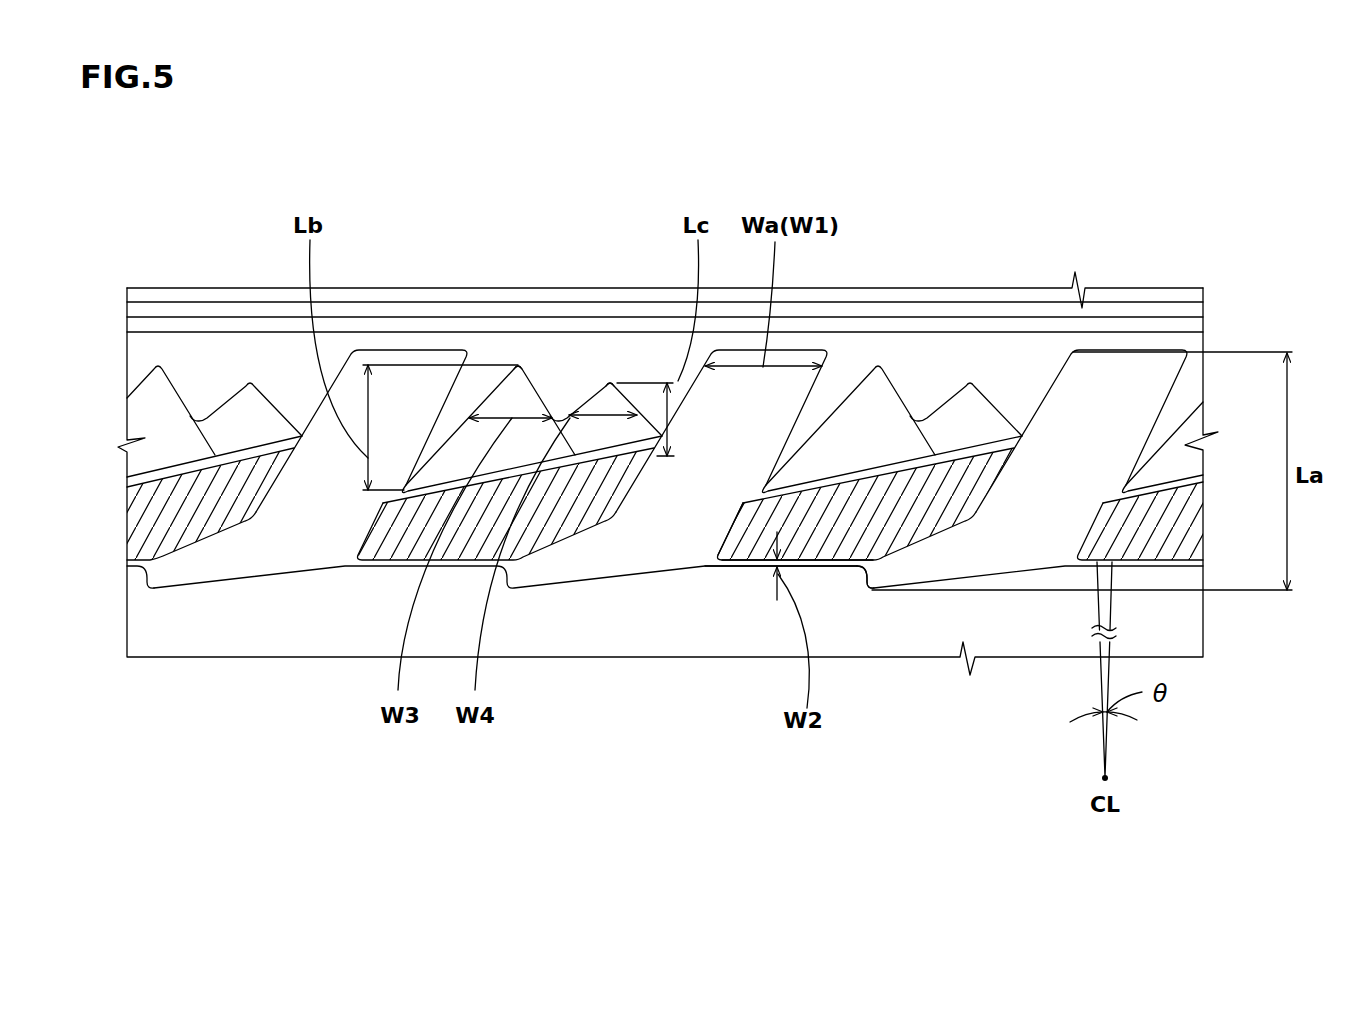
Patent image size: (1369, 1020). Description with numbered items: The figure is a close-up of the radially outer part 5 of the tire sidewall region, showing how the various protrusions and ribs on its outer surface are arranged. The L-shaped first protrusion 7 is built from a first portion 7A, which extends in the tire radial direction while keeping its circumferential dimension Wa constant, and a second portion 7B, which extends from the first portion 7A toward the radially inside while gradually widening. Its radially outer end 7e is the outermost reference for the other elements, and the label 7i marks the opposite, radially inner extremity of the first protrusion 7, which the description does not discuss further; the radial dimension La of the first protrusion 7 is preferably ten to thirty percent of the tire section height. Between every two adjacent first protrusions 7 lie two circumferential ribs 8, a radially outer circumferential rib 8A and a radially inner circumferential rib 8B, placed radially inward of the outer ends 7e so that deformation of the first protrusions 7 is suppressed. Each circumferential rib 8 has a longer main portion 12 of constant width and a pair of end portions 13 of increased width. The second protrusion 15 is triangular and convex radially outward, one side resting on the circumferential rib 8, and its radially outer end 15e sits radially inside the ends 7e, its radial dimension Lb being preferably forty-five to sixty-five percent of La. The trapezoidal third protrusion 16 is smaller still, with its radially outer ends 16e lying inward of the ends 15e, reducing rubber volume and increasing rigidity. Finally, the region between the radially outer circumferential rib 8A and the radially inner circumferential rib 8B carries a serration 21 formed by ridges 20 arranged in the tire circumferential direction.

The radially outer part 5 is at (1030, 240).
The first protrusion 7 is at (665, 508).
The first portion 7A is at (693, 473).
The second portion 7B is at (570, 562).
The radially outer end of the first protrusion 7e is at (386, 351).
The fin inner bend 7i is at (147, 592).
The circumferential rib 8 is at (580, 590).
The radially outer circumferential rib 8A is at (953, 457).
The radially inner circumferential rib 8B is at (838, 569).
The main portion 12 is at (757, 566).
The end portions 13 is at (713, 561).
The second protrusion 15 is at (518, 400).
The radially outer end of the second protrusion 15e is at (516, 362).
The third protrusion 16 is at (597, 407).
The radially outer ends of the third protrusions 16e is at (611, 380).
The ridges 20 is at (1177, 505).
The serration 21 is at (1160, 471).